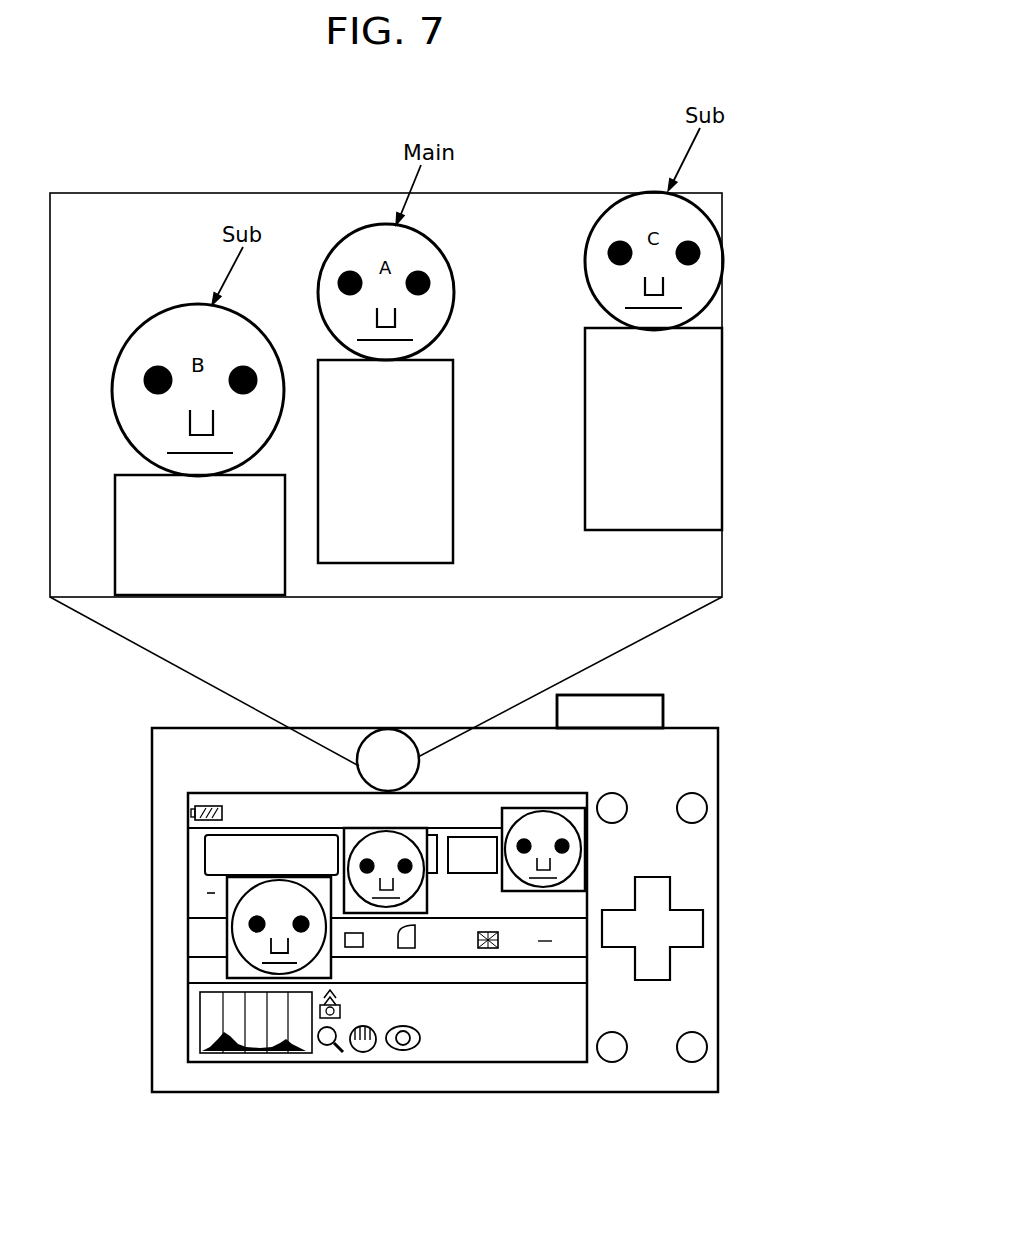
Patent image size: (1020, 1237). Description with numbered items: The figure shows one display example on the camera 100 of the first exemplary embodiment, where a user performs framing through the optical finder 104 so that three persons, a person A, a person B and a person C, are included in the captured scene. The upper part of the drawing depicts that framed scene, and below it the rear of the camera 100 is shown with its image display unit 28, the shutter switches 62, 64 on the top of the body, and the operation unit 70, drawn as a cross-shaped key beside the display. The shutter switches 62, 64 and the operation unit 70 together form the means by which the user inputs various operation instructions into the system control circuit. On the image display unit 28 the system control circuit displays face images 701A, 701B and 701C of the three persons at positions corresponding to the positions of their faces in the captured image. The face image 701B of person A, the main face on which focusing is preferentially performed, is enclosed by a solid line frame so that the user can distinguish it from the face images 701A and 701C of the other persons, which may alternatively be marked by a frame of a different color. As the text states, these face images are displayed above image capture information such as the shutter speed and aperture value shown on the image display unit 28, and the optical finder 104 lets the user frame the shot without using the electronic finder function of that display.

The camera 100 is at (717, 671).
The shutter switch (SW1) 62 is at (663, 703).
The shutter switch (SW2) 64 is at (610, 711).
The optical finder 104 is at (359, 771).
The image display unit 28 is at (188, 893).
The operation unit 70 is at (718, 948).
The face image 701A is at (227, 967).
The face image 701B is at (428, 897).
The face image 701C is at (567, 892).